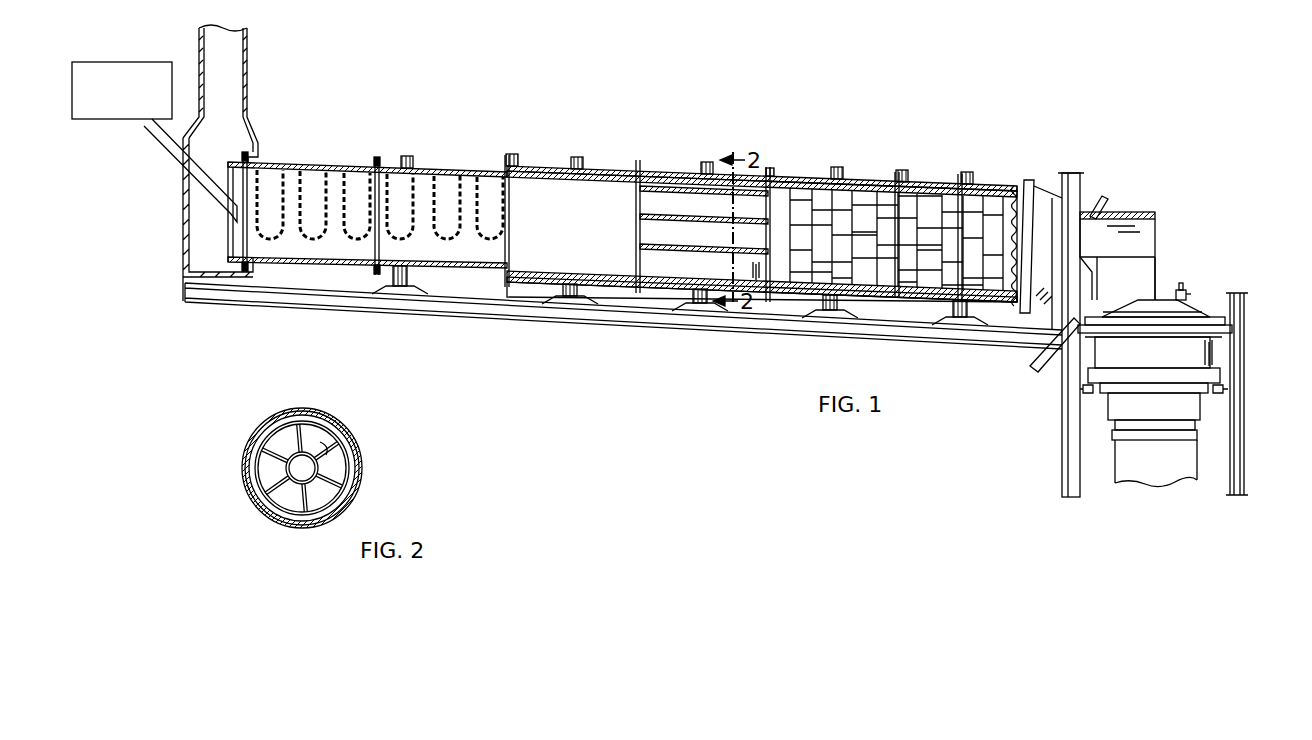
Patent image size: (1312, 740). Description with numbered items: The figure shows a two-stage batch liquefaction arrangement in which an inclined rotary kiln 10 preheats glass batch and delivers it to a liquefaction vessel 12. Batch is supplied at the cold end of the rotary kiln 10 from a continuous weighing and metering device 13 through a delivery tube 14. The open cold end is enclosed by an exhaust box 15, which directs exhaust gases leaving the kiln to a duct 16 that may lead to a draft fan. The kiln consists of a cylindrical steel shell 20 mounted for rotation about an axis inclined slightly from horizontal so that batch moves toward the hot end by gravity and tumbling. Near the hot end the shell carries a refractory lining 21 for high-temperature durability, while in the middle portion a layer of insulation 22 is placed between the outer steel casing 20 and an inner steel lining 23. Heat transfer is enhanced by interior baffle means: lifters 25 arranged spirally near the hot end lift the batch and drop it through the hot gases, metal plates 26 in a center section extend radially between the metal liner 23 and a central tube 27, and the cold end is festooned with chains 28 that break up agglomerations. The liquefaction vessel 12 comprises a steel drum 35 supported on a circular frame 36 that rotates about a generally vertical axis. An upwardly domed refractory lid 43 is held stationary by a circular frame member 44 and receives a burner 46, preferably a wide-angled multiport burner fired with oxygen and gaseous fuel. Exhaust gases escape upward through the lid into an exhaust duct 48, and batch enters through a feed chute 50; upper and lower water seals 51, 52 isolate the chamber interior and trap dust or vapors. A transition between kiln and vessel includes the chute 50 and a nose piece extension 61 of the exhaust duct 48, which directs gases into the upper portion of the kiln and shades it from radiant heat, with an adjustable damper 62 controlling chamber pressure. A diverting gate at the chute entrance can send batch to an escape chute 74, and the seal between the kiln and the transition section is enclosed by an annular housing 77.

In FIG. 1, the rotary kiln 10 is at (871, 170).
In FIG. 1, the liquefaction vessel 12 is at (1228, 288).
In FIG. 1, the continuous weighing and metering device 13 is at (103, 120).
In FIG. 1, the delivery tube 14 is at (178, 152).
In FIG. 1, the exhaust box 15 is at (183, 237).
In FIG. 1, the duct 16 is at (250, 46).
In FIG. 1, the cylindrical steel shell 20 is at (920, 180).
In FIG. 2, the cylindrical steel shell 20 is at (252, 442).
In FIG. 1, the refractory lining 21 is at (791, 183).
In FIG. 1, the layer of insulation 22 is at (532, 170).
In FIG. 2, the layer of insulation 22 is at (277, 420).
In FIG. 1, the inner steel lining 23 is at (520, 270).
In FIG. 2, the inner steel lining 23 is at (260, 468).
In FIG. 1, the lifters 25 is at (953, 243).
In FIG. 1, the metal plates 26 is at (640, 192).
In FIG. 2, the metal plates 26 is at (327, 437).
In FIG. 1, the central tube 27 is at (657, 243).
In FIG. 2, the central tube 27 is at (330, 462).
In FIG. 1, the chains 28 is at (290, 210).
In FIG. 1, the steel drum 35 is at (1213, 348).
In FIG. 1, the circular frame 36 is at (1222, 377).
In FIG. 1, the refractory lid 43 is at (1163, 300).
In FIG. 1, the circular frame member 44 is at (1238, 327).
In FIG. 1, the burner 46 is at (1185, 290).
In FIG. 1, the exhaust duct 48 is at (1157, 262).
In FIG. 1, the feed chute 50 is at (1093, 303).
In FIG. 1, the upper water seal 51 is at (1103, 340).
In FIG. 1, the lower water seal 52 is at (1199, 433).
In FIG. 1, the nose piece extension 61 is at (1148, 210).
In FIG. 1, the adjustable damper 62 is at (1104, 203).
In FIG. 1, the escape chute 74 is at (1040, 372).
In FIG. 1, the annular housing 77 is at (1070, 176).